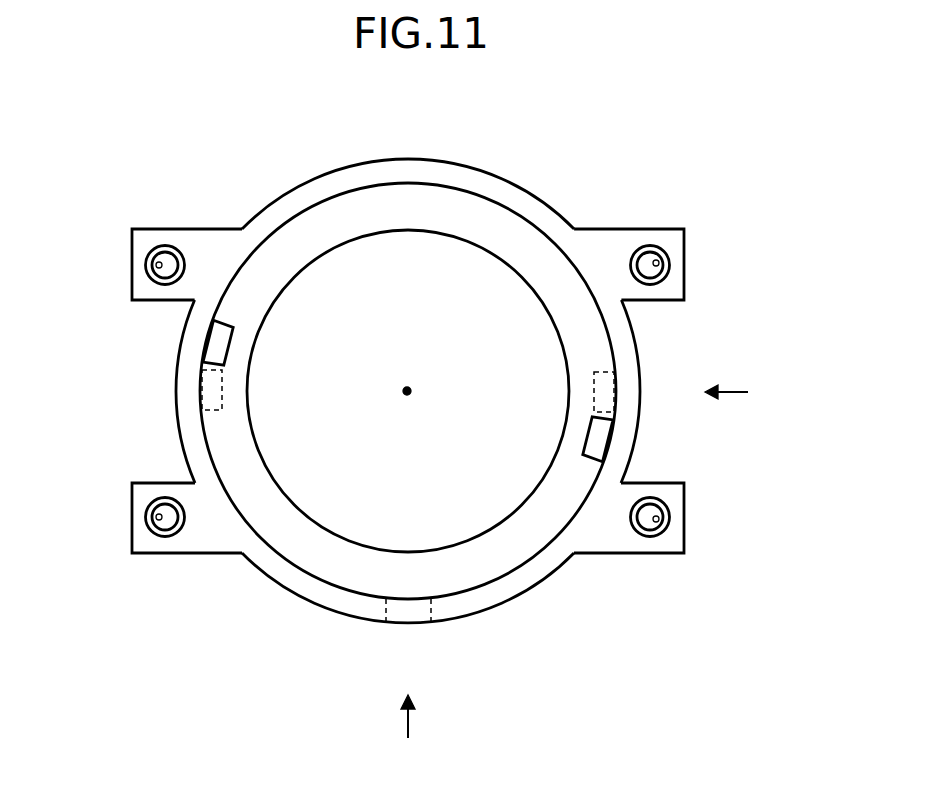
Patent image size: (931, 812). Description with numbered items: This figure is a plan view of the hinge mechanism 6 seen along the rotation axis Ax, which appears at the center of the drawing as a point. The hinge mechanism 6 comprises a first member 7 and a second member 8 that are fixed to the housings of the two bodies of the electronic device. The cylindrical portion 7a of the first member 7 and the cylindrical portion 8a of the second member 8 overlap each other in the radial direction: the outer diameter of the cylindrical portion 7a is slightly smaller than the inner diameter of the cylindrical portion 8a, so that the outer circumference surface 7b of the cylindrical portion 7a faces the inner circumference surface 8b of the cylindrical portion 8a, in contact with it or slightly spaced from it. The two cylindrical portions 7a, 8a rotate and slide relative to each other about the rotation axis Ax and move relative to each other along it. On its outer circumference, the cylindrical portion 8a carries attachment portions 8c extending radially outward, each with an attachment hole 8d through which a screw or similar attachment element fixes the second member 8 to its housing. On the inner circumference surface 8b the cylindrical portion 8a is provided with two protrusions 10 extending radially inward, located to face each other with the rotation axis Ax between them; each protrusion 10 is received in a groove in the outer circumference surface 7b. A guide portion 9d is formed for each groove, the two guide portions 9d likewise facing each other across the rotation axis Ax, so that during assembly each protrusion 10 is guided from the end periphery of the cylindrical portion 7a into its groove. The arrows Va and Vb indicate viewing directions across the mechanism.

The hinge mechanism 6 is at (605, 161).
The first member 7 is at (496, 582).
The cylindrical portion 7a is at (312, 567).
The outer circumference surface 7b is at (338, 588).
The second member 8 is at (494, 174).
The cylindrical portion 8a is at (348, 177).
The inner circumference surface 8b is at (386, 191).
The attachment portion 8c is at (198, 243).
The attachment hole 8d is at (160, 265).
The guide portion 9d is at (215, 342).
The protrusion 10 is at (222, 391).
The rotation axis Ax is at (410, 388).
The view direction a Va is at (743, 395).
The view direction b Vb is at (406, 732).